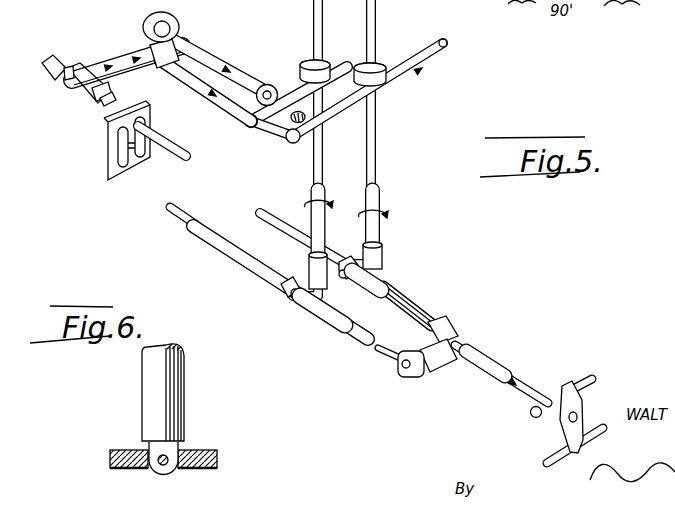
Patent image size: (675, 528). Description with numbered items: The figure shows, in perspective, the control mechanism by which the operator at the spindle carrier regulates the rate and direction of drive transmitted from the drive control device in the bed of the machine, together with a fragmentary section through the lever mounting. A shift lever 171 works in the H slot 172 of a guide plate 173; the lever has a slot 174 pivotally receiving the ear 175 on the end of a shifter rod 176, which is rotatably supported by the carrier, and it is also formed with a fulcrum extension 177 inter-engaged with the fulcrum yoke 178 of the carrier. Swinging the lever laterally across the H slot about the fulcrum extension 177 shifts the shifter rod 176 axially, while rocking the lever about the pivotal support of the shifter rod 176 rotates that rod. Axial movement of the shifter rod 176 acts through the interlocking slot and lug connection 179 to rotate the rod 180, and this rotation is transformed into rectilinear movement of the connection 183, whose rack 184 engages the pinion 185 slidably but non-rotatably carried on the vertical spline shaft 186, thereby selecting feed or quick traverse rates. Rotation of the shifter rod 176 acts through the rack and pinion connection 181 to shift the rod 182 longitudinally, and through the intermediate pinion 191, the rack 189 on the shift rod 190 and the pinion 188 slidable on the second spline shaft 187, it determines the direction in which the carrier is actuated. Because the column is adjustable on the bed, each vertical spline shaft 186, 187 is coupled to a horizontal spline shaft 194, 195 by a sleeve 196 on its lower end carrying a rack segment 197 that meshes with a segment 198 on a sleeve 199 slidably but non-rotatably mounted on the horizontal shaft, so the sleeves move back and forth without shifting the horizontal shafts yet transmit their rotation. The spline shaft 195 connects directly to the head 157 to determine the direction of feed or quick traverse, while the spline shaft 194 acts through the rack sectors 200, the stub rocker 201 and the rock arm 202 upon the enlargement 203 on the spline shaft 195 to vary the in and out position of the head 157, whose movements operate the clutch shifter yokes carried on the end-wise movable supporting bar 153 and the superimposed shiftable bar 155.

In FIG. 5, the supporting bar 153 is at (556, 468).
In FIG. 5, the shiftable bar 155 is at (534, 418).
In FIG. 5, the head 157 is at (576, 408).
In FIG. 5, the shift lever 171 is at (167, 152).
In FIG. 6, the shift lever 171 is at (207, 451).
In FIG. 5, the H slot 172 is at (133, 143).
In FIG. 5, the guide plate 173 is at (130, 165).
In FIG. 5, the slot 174 is at (103, 103).
In FIG. 5, the ear 175 is at (97, 95).
In FIG. 6, the ear 175 is at (166, 470).
In FIG. 5, the shifter rod 176 is at (150, 51).
In FIG. 6, the shifter rod 176 is at (170, 396).
In FIG. 5, the fulcrum extension 177 is at (87, 62).
In FIG. 5, the fulcrum yoke 178 is at (52, 83).
In FIG. 5, the interlocking slot and lug connection 179 is at (161, 21).
In FIG. 5, the rod 180 is at (212, 58).
In FIG. 5, the rack and pinion connection 181 is at (175, 71).
In FIG. 5, the rod 182 is at (275, 134).
In FIG. 5, the connection 183 is at (280, 97).
In FIG. 5, the rack 184 is at (333, 62).
In FIG. 5, the pinion 185 is at (305, 62).
In FIG. 5, the spline shaft 186 is at (324, 149).
In FIG. 5, the second spline shaft 187 is at (374, 147).
In FIG. 5, the pinion 188 is at (385, 61).
In FIG. 5, the rack 189 is at (386, 85).
In FIG. 5, the shift rod 190 is at (448, 40).
In FIG. 5, the intermediate pinion 191 is at (297, 145).
In FIG. 5, the spline shaft 194 is at (337, 327).
In FIG. 5, the spline shaft 195 is at (400, 300).
In FIG. 5, the sleeve 196 is at (311, 271).
In FIG. 5, the rack segment 197 is at (283, 286).
In FIG. 5, the segment 198 is at (292, 299).
In FIG. 5, the sleeve 199 is at (306, 313).
In FIG. 5, the rack sectors 200 is at (421, 379).
In FIG. 5, the stub rocker 201 is at (446, 354).
In FIG. 5, the rock arm 202 is at (470, 344).
In FIG. 5, the enlargement 203 is at (446, 330).